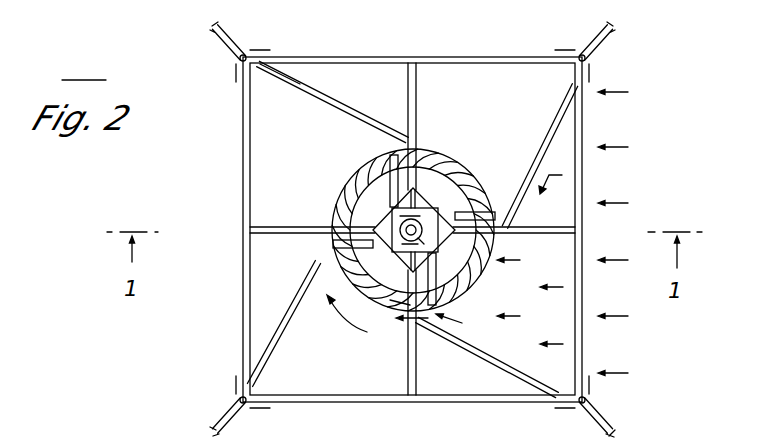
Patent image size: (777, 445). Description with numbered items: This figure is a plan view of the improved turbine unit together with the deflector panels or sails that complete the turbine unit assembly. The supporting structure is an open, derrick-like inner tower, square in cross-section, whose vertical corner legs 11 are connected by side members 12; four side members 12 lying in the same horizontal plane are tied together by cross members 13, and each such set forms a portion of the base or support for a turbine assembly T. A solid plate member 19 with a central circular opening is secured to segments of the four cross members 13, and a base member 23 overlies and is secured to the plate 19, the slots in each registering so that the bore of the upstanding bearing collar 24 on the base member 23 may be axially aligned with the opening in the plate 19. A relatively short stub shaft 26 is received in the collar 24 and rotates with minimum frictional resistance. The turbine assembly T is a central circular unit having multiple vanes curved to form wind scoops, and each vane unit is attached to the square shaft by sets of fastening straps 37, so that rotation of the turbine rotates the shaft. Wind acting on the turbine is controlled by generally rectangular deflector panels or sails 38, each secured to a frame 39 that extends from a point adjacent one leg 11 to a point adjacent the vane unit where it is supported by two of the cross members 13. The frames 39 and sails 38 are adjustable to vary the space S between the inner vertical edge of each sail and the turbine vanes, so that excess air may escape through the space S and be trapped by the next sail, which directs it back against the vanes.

The side members 12 is at (317, 56).
The vertical corner legs 11 is at (240, 62).
The cross members 13 is at (418, 78).
The deflector panels or sails 38 is at (368, 109).
The frame 39 is at (308, 86).
The turbine assembly T is at (352, 177).
The base member 23 is at (458, 166).
The bearing collar 24 is at (395, 219).
The stub shaft 26 is at (480, 206).
The fastening straps 37 is at (385, 251).
The space S is at (421, 146).
The solid plate member 19 is at (402, 309).